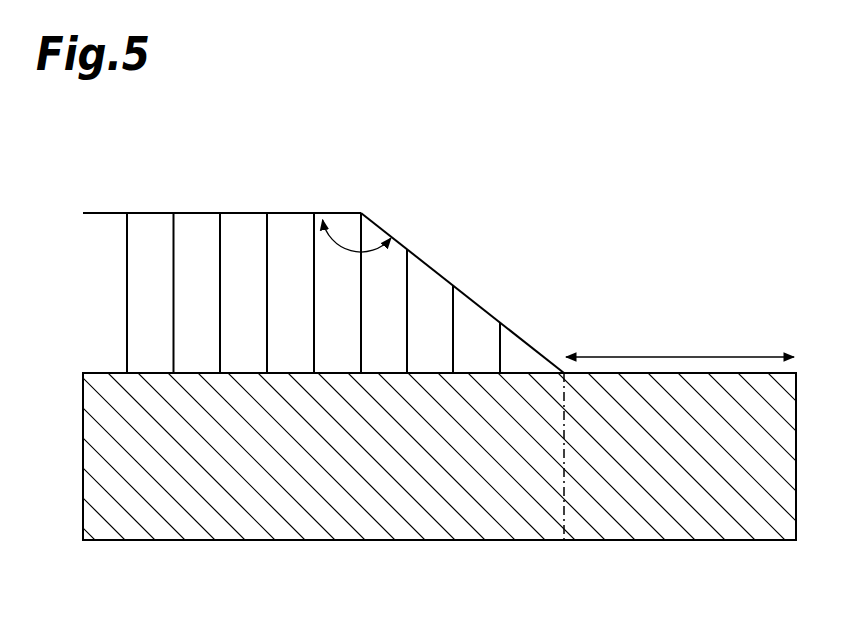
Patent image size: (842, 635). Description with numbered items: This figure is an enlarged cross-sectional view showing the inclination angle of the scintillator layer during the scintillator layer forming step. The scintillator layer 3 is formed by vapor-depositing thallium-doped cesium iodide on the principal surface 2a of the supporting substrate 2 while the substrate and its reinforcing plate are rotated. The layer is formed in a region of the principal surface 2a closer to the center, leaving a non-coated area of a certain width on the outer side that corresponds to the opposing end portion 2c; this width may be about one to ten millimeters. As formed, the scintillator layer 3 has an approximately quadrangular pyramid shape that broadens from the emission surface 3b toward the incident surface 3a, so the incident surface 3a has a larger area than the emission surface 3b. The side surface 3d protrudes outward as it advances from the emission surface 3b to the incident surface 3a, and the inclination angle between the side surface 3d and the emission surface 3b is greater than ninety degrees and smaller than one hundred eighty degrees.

The supporting substrate 2 is at (372, 478).
The principal surface 2a is at (153, 372).
The opposing end portion 2c is at (672, 455).
The scintillator layer 3 is at (245, 232).
The incident surface 3a is at (244, 373).
The emission surface 3b is at (158, 213).
The side surface 3d is at (443, 277).